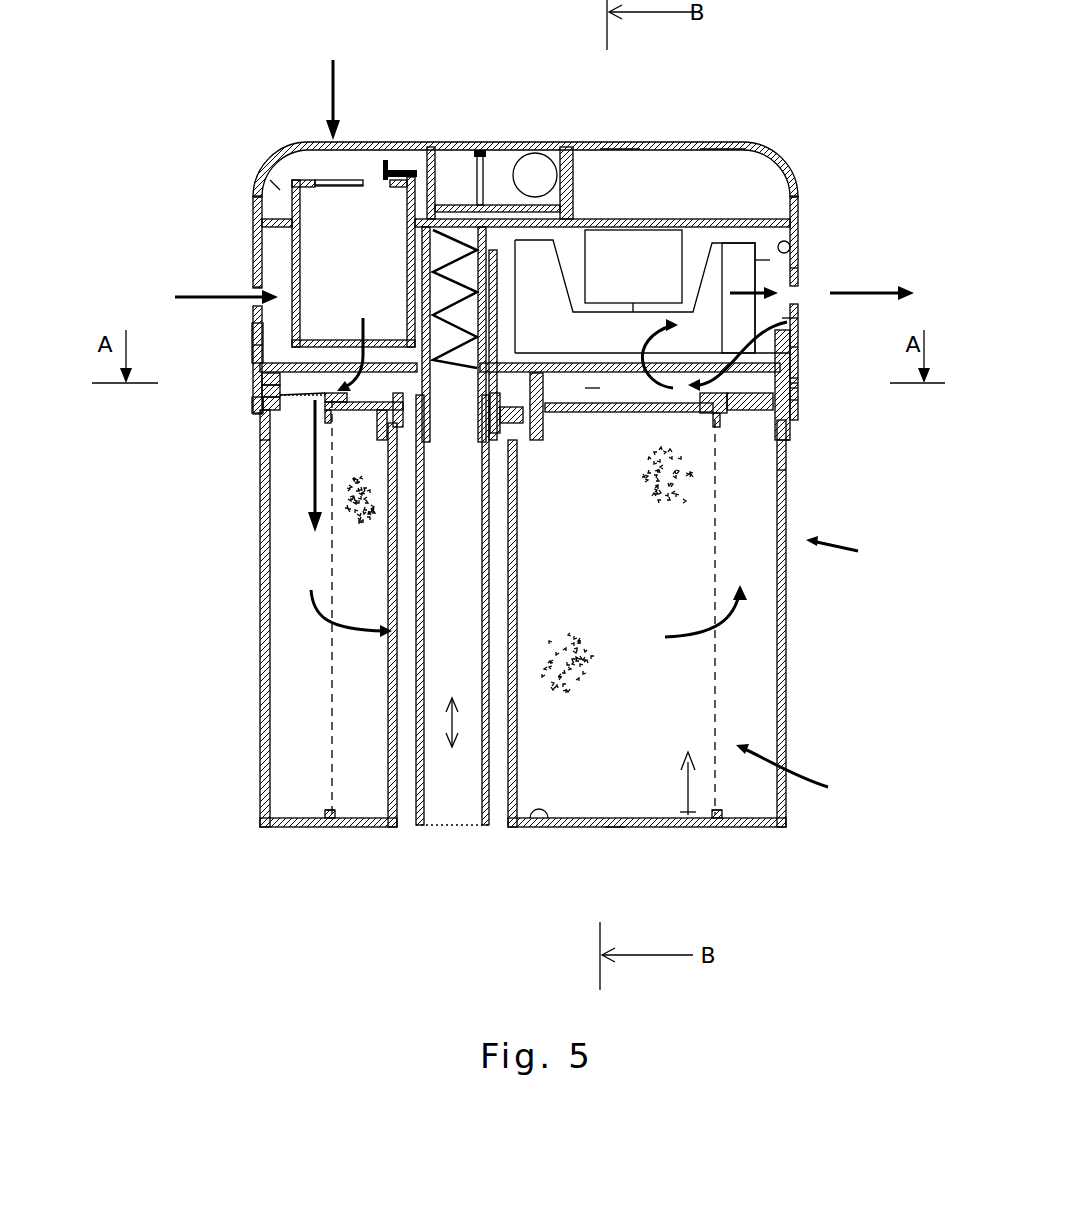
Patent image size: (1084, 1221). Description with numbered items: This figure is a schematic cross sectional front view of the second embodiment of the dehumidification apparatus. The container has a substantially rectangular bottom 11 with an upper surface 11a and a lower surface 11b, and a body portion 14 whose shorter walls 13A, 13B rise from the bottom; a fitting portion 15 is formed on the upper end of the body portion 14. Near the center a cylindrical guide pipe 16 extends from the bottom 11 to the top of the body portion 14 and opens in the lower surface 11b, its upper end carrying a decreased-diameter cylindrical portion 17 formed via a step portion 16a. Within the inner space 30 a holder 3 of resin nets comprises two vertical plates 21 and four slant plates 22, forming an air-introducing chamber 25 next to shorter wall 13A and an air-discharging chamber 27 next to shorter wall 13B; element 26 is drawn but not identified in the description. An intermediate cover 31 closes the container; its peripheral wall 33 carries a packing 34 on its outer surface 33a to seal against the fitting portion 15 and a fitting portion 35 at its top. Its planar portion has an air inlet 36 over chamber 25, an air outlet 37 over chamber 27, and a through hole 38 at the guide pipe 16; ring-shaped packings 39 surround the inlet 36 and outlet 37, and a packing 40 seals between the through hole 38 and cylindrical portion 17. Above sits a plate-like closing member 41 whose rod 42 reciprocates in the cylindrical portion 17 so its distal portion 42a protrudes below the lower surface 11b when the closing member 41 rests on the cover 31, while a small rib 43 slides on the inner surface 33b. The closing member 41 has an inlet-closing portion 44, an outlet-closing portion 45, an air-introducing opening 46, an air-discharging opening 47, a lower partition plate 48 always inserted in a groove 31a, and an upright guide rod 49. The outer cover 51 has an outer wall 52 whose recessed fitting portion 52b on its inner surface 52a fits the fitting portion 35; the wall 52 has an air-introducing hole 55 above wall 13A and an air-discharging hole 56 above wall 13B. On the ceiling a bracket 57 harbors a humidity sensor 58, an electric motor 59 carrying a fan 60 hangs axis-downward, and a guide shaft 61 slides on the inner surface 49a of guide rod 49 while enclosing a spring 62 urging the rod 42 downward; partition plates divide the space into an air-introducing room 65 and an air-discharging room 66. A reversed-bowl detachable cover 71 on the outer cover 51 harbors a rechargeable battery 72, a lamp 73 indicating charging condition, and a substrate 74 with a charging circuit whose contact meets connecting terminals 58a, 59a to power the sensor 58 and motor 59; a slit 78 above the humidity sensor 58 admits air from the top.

The holder 3 is at (789, 771).
The bottom 11 is at (576, 827).
The upper surface of the bottom 11a is at (540, 820).
The lower surface of the bottom 11b is at (615, 827).
The shorter wall 13A is at (262, 665).
The shorter wall 13B is at (786, 663).
The body portion 14 is at (847, 549).
The fitting portion 15 is at (797, 388).
The guide pipe 16 is at (374, 826).
The step portion 16a is at (418, 470).
The cylindrical portion 17 is at (424, 425).
The vertical plates 21 is at (330, 727).
The slant plates 22 is at (601, 732).
The air-introducing chamber 25 is at (287, 607).
The flow passage 26 is at (656, 805).
The air-discharging chamber 27 is at (770, 615).
The inner space 30 is at (692, 815).
The intermediate cover 31 is at (657, 410).
The groove 31a is at (536, 414).
The peripheral wall 33 is at (262, 390).
The outer surface of the peripheral wall 33a is at (256, 393).
The inner surface of the peripheral wall 33b is at (262, 374).
The packing 34 is at (256, 402).
The fitting portion 35 is at (256, 345).
The air inlet 36 is at (300, 445).
The air outlet 37 is at (786, 470).
The through hole 38 is at (477, 388).
The ring-shaped packing 39 is at (262, 440).
The packing 40 is at (384, 440).
The closing member 41 is at (592, 390).
The rod 42 is at (497, 812).
The distal portion of the rod 42a is at (440, 826).
The small rib 43 is at (256, 315).
The inlet-closing portion 44 is at (313, 362).
The outlet-closing portion 45 is at (790, 312).
The air-introducing opening 46 is at (377, 355).
The air-discharging opening 47 is at (607, 373).
The lower partition plate 48 is at (566, 415).
The guide rod 49 is at (407, 300).
The inner surface of the guide rod 49a is at (517, 350).
The outer cover 51 is at (742, 150).
The outer wall 52 is at (797, 268).
The inner surface of the outer wall 52a is at (256, 268).
The recessed fitting portion 52b is at (256, 340).
The air-introducing hole 55 is at (255, 287).
The air-discharging hole 56 is at (797, 247).
The bracket 57 is at (302, 157).
The humidity sensor 58 is at (278, 183).
The connecting terminal 58a is at (458, 205).
The electric motor 59 is at (662, 245).
The connecting terminal 59a is at (548, 240).
The fan 60 is at (720, 260).
The guide shaft 61 is at (345, 183).
The spring 62 is at (432, 148).
The air-introducing room 65 is at (262, 237).
The air-discharging room 66 is at (768, 262).
The detachable cover 71 is at (622, 148).
The rechargeable battery 72 is at (566, 148).
The lamp 73 is at (480, 150).
The substrate 74 is at (515, 158).
The slit 78 is at (392, 162).